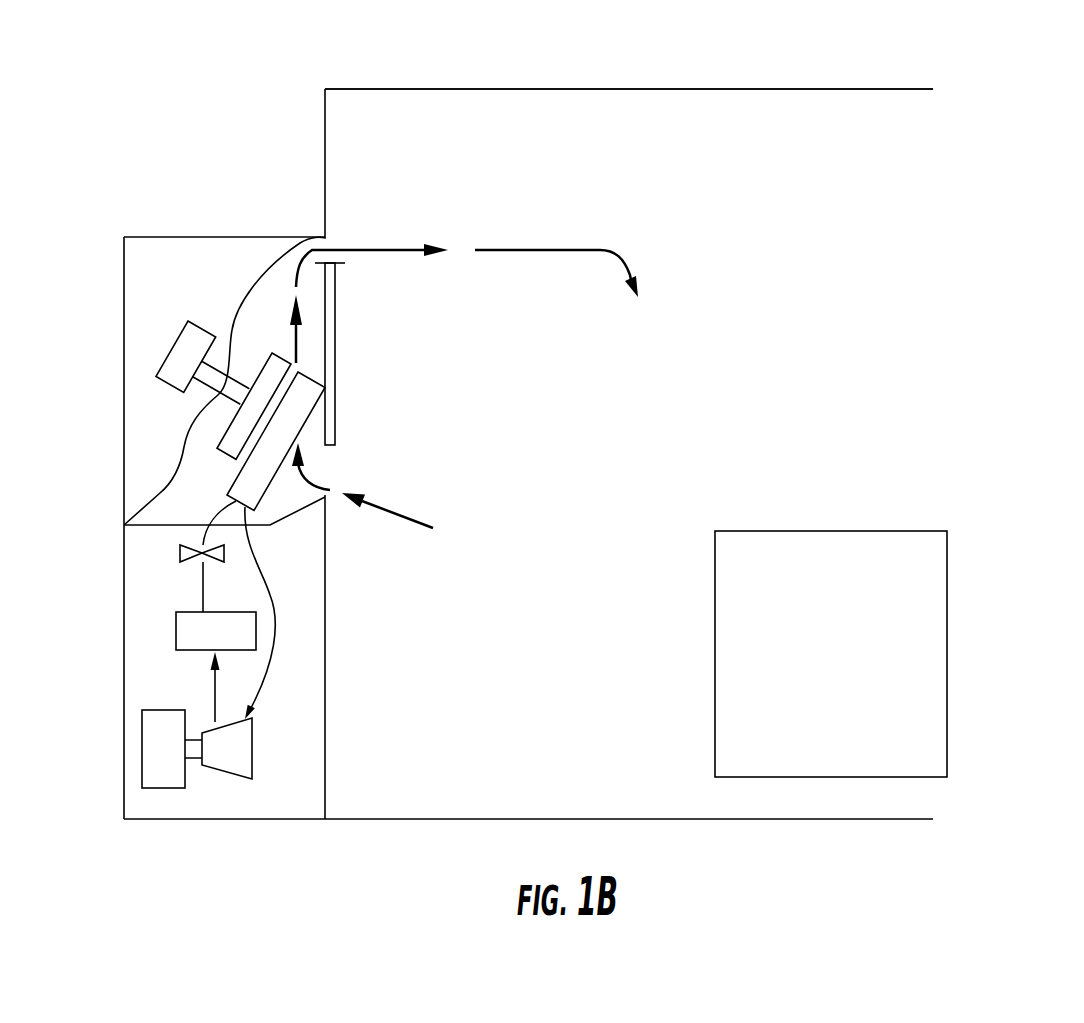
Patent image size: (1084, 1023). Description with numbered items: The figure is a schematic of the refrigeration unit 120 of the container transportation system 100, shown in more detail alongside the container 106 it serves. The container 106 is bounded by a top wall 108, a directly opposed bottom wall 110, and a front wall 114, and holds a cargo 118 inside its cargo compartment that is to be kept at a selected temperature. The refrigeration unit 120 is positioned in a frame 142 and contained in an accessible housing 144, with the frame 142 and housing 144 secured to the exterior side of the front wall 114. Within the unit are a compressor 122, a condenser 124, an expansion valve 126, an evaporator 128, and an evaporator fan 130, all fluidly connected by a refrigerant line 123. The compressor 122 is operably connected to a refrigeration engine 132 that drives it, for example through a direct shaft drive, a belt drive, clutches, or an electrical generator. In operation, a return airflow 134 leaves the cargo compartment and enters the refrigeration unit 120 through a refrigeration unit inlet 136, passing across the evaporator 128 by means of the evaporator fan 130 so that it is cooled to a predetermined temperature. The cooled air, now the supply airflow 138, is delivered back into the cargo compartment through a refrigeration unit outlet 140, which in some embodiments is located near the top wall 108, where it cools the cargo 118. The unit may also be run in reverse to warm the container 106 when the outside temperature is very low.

The container transportation system 100 is at (178, 83).
The container 106 is at (863, 89).
The top wall 108 is at (618, 89).
The bottom wall 110 is at (442, 819).
The front wall 114 is at (325, 182).
The cargo 118 is at (850, 672).
The refrigeration unit 120 is at (128, 176).
The compressor 122 is at (225, 773).
The refrigerant line 123 is at (203, 600).
The condenser 124 is at (175, 640).
The expansion valve 126 is at (180, 553).
The evaporator 128 is at (300, 398).
The evaporator fan 130 is at (222, 428).
The refrigeration engine 132 is at (155, 750).
The return airflow 134 is at (405, 524).
The refrigeration unit inlet 136 is at (337, 480).
The supply airflow 138 is at (533, 248).
The refrigeration unit outlet 140 is at (327, 243).
The frame 142 is at (150, 500).
The housing 144 is at (123, 343).